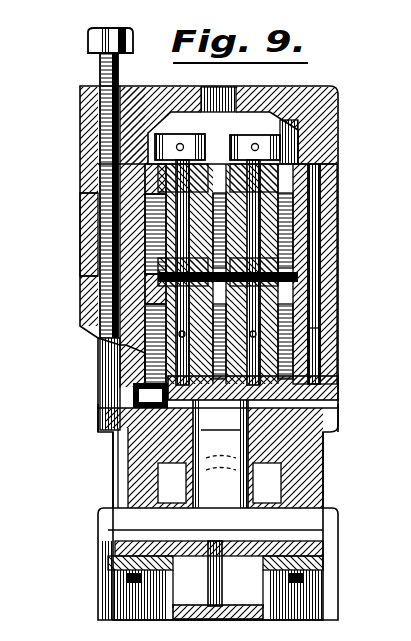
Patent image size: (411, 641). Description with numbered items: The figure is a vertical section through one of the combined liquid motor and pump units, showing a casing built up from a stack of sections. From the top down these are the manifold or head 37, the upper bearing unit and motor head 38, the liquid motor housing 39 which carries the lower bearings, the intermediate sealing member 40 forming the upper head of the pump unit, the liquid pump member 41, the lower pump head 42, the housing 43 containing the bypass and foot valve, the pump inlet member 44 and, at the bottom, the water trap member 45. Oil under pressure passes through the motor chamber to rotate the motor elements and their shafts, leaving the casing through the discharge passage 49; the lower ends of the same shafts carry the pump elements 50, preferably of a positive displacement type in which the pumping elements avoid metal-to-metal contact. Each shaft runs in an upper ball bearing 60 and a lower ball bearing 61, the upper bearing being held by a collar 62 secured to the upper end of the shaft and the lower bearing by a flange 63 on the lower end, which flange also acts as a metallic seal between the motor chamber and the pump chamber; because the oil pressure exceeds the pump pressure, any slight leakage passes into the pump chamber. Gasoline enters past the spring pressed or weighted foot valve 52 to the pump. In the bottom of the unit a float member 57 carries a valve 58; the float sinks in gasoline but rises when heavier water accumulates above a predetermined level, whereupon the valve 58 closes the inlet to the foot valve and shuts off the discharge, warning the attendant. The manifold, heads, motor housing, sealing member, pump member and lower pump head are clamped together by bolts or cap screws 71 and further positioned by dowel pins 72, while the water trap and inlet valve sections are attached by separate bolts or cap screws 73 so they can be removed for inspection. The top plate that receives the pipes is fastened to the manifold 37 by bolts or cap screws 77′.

The manifold or head 37 is at (325, 105).
The upper bearing unit and motor head 38 is at (325, 169).
The liquid motor housing 39 is at (322, 231).
The intermediate sealing member 40 is at (78, 282).
The liquid pump member 41 is at (320, 329).
The lower pump head 42 is at (322, 383).
The housing containing bypass and foot valve 43 is at (280, 453).
The pump inlet member 44 is at (326, 540).
The water trap member 45 is at (178, 612).
The discharge passage 49 is at (205, 80).
The pump elements 50 is at (282, 305).
The foot valve 52 is at (220, 453).
The float member 57 is at (140, 612).
The valve 58 is at (210, 530).
The ball bearing 60 is at (322, 147).
The ball bearing 61 is at (275, 257).
The collar 62 is at (266, 128).
The flange 63 is at (280, 271).
The bolts or cap screws 71 is at (150, 355).
The dowel pins 72 is at (310, 211).
The bolts or cap screws 73 is at (112, 572).
The bolts or cap screws 77′ is at (103, 50).